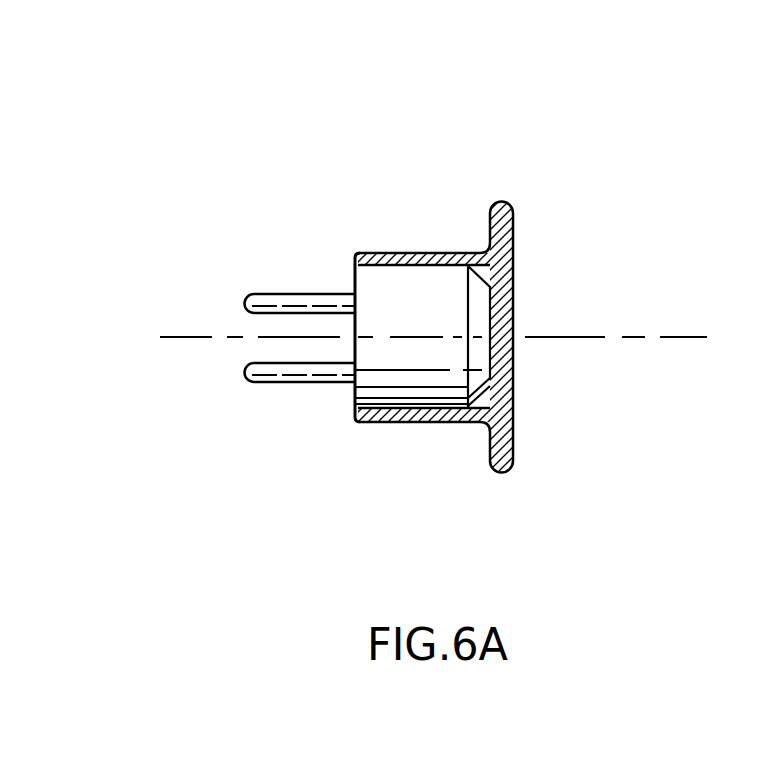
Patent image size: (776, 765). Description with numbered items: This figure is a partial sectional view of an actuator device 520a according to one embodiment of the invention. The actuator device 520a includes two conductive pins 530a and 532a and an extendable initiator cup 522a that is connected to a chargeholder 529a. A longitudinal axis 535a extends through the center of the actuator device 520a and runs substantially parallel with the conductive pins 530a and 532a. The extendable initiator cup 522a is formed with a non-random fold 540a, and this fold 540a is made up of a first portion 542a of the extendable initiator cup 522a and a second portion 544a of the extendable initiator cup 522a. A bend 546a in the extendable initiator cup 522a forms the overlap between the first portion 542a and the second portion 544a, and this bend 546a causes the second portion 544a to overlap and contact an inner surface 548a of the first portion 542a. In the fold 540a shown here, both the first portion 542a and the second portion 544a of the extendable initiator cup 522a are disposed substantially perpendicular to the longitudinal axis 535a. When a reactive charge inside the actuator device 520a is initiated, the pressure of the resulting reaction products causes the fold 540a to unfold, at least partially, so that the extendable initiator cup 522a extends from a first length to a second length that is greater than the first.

The actuator device 520a is at (315, 200).
The extendable initiator cup 522a is at (362, 253).
The chargeholder 529a is at (353, 280).
The conductive pin 530a is at (241, 382).
The conductive pin 532a is at (246, 298).
The longitudinal axis 535a is at (693, 337).
The non-random fold 540a is at (547, 199).
The first portion 542a is at (490, 210).
The second portion 544a is at (513, 228).
The bend 546a is at (500, 203).
The inner surface 548a is at (492, 207).